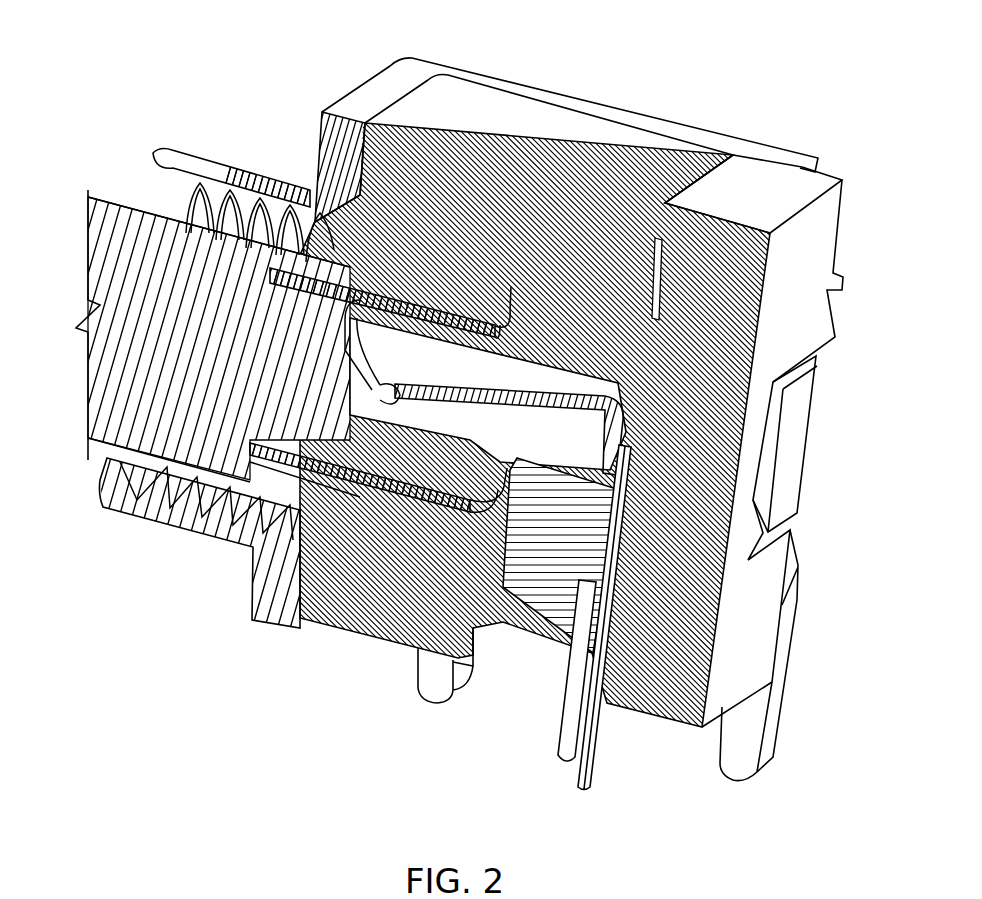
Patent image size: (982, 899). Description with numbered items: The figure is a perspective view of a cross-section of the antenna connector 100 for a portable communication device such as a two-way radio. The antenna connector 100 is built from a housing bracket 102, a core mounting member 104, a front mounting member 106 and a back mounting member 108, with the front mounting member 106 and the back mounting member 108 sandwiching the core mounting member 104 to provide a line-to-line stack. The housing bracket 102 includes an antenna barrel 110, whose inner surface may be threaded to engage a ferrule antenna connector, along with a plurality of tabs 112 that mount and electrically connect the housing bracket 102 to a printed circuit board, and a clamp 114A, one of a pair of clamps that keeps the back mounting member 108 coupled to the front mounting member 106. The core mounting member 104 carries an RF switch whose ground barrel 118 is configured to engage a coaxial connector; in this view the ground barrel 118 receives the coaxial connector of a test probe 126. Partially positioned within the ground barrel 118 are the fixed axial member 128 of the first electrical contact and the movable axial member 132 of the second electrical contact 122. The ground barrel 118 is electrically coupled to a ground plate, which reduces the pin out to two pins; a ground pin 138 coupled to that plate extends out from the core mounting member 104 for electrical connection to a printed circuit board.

The antenna connector 100 is at (116, 50).
The housing bracket 102 is at (673, 130).
The core mounting member 104 is at (552, 655).
The front mounting member 106 is at (545, 132).
The back mounting member 108 is at (822, 230).
The antenna barrel 110 is at (182, 528).
The tabs 112 is at (735, 770).
The clamp 114A is at (795, 430).
The ground barrel 118 is at (342, 440).
The second electrical contact 122 is at (580, 780).
The test probe 126 is at (92, 396).
The fixed axial member 128 is at (352, 376).
The movable axial member 132 is at (508, 402).
The ground pin 138 is at (567, 703).